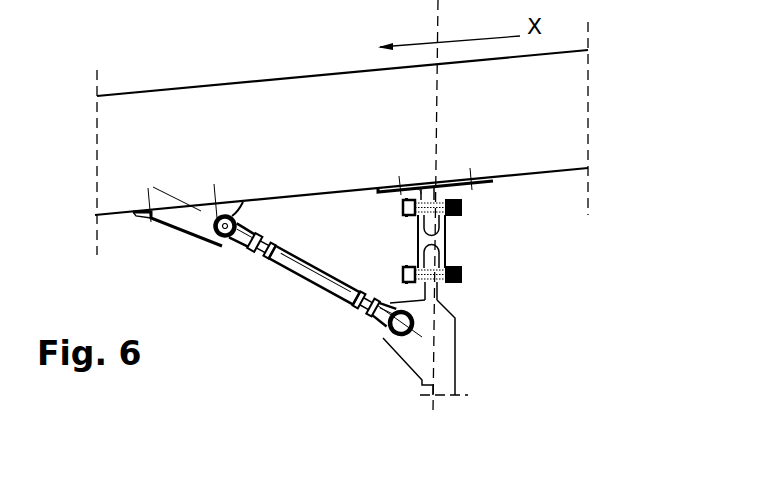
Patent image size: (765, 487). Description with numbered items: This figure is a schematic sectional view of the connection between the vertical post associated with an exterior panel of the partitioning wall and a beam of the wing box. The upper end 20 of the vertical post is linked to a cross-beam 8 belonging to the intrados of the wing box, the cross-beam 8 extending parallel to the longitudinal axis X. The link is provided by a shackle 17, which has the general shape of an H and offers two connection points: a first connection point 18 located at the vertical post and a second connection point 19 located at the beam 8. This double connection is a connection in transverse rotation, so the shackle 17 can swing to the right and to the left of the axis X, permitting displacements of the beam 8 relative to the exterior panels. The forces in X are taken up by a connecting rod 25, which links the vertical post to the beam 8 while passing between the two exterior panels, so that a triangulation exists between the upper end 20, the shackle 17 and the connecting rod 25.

The cross-beam 8 is at (246, 99).
The shackle 17 is at (446, 240).
The first connection point 18 is at (462, 279).
The second connection point 19 is at (462, 206).
The upper end 20 is at (450, 368).
The connecting rod 25 is at (297, 280).